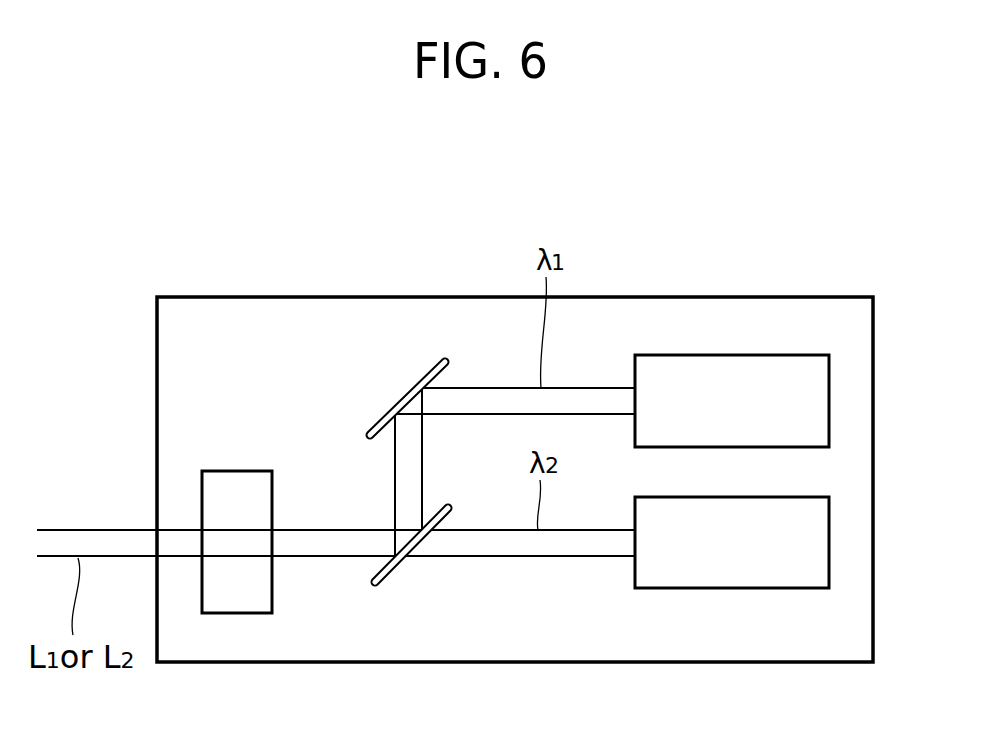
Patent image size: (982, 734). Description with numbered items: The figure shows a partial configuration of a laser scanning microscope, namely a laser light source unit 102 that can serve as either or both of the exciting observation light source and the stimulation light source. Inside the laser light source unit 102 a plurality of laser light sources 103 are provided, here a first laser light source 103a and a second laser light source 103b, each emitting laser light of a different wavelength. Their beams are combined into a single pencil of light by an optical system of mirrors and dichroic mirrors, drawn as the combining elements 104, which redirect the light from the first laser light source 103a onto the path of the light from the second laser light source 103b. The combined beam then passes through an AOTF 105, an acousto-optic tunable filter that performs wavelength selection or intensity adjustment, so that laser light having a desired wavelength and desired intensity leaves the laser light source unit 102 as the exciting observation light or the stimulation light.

The laser light source unit 102 is at (330, 297).
The laser light sources 103 is at (732, 473).
The first laser light source 103a is at (745, 355).
The second laser light source 103b is at (737, 590).
The mirrors 104 is at (390, 573).
The AOTF (Acousto-Optic Tunable Filter) 105 is at (243, 471).